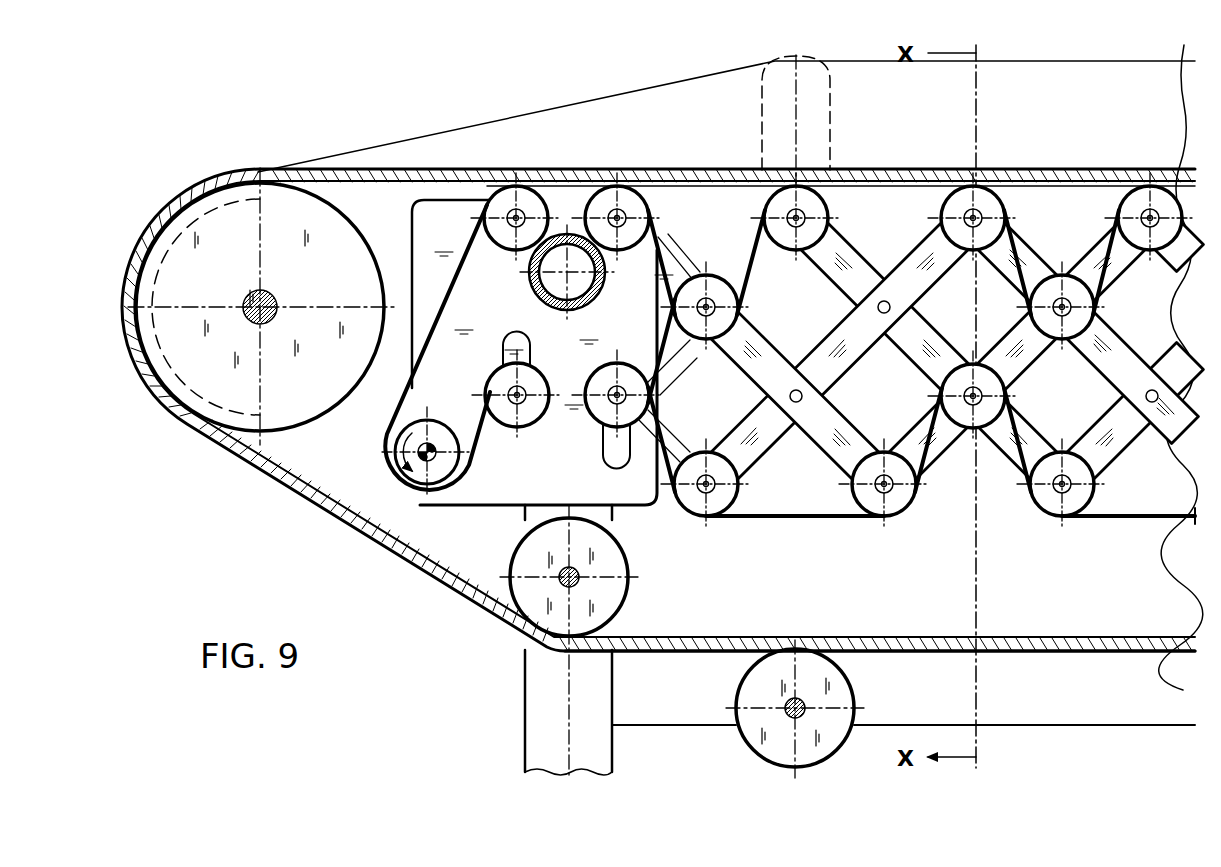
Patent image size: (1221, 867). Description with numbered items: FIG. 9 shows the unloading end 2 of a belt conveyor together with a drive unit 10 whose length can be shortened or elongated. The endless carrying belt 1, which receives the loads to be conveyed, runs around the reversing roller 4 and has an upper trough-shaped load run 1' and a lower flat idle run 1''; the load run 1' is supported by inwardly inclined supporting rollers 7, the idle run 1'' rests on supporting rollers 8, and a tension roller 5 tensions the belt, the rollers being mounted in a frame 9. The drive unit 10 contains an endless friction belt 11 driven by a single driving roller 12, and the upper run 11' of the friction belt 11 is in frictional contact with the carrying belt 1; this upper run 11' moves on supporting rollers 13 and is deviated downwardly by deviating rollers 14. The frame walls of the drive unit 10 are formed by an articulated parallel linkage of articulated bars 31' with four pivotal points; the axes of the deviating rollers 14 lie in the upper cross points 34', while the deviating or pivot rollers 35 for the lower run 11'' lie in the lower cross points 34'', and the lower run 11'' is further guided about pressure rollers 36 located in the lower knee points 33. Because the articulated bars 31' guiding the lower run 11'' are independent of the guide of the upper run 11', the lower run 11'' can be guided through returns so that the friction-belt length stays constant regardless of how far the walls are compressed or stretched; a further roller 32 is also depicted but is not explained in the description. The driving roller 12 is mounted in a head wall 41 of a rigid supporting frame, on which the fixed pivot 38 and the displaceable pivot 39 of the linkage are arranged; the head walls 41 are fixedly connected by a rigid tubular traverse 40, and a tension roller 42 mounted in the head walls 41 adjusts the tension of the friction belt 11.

The carrying belt 1 is at (658, 410).
The load run 1' is at (727, 128).
The idle run 1'' is at (877, 621).
The unloading end 2 is at (246, 133).
The reversing roller 4 is at (210, 220).
The tension roller 5 is at (608, 568).
The inwardly inclined supporting rollers 7 is at (765, 125).
The supporting rollers 8 is at (835, 690).
The frame 9 is at (540, 705).
The drive unit 10 is at (452, 527).
The friction belt 11 is at (530, 348).
The upper run of friction belt 11' is at (841, 250).
The lower run of friction belt 11'' is at (950, 477).
The driving roller 12 is at (437, 420).
The supporting rollers 13 is at (792, 250).
The deviating rollers 14 is at (700, 298).
The articulated bars 31' is at (920, 351).
The roller 32 is at (998, 222).
The lower knee points 33 is at (1088, 488).
The upper cross points 34' is at (1033, 307).
The lower cross points 34'' is at (1009, 396).
The pivot rollers 35 is at (980, 440).
The pressure rollers 36 is at (895, 510).
The fixed pivot 38 is at (662, 226).
The displaceable pivot 39 is at (630, 400).
The rigid tubular traverse 40 is at (530, 287).
The head wall 41 is at (500, 490).
The tension roller 42 is at (533, 410).